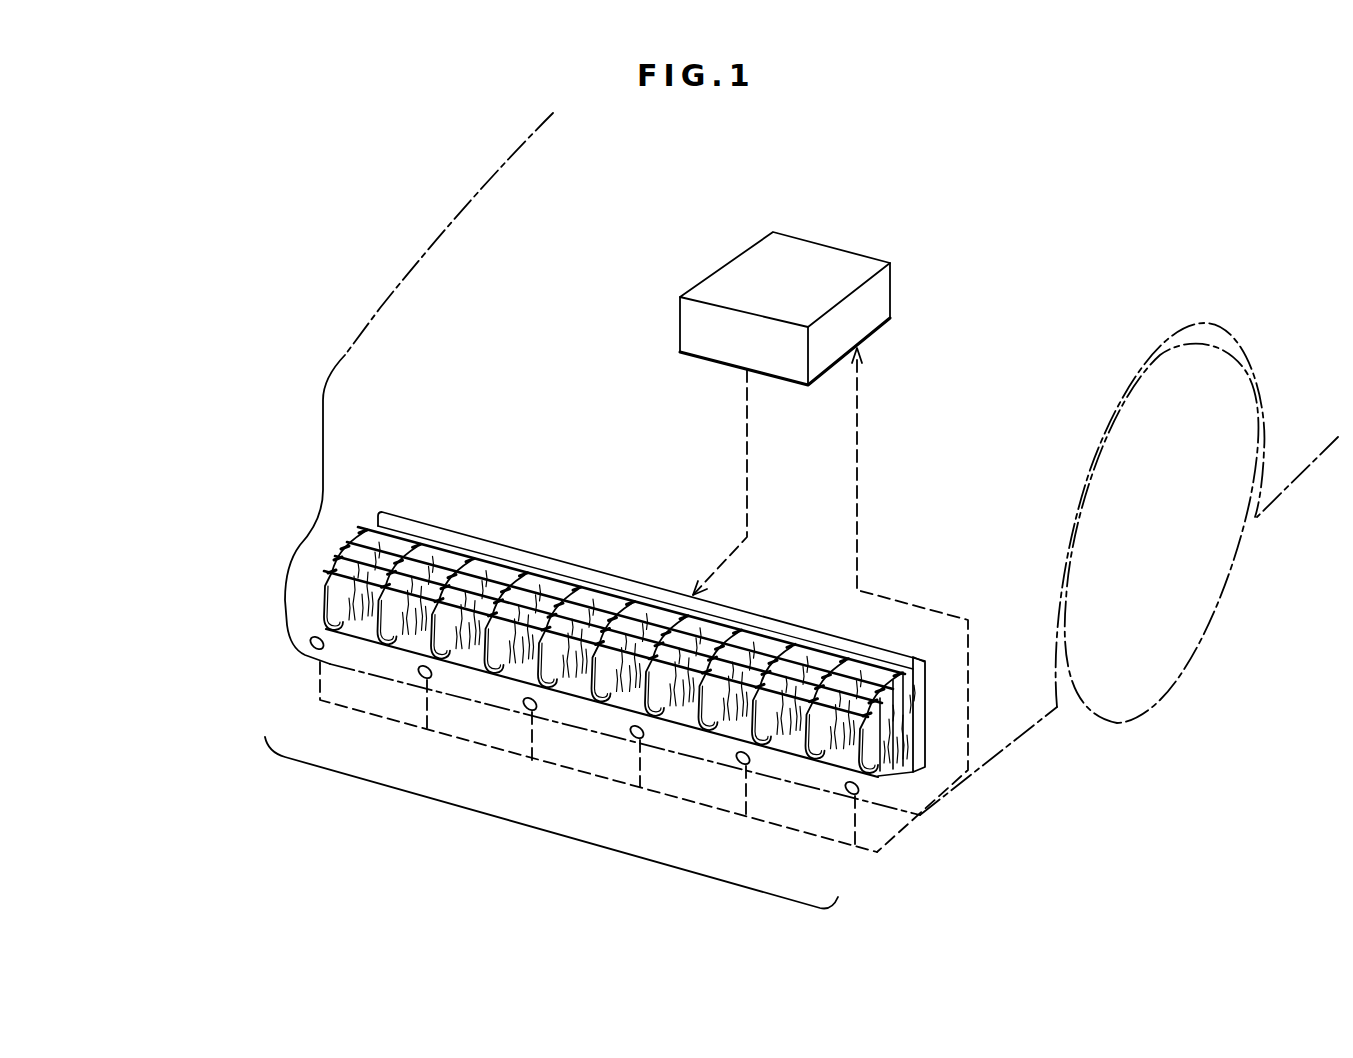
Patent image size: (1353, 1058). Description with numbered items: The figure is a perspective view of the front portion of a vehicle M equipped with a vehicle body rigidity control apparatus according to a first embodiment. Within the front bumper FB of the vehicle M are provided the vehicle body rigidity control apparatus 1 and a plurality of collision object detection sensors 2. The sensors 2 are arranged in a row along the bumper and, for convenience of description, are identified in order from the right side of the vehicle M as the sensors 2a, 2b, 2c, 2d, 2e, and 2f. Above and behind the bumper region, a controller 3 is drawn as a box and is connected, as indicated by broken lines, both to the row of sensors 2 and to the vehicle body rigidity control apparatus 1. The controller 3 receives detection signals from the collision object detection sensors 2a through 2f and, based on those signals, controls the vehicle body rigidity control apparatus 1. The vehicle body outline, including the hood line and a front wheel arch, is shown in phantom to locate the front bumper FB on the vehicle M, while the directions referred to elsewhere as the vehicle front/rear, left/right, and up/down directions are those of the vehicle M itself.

The vehicle M is at (437, 228).
The vehicle body rigidity control apparatus 1 is at (332, 561).
The front bumper FB is at (282, 630).
The collision object detection sensors 2 is at (571, 794).
The collision object detection sensor 2a is at (315, 649).
The collision object detection sensor 2b is at (423, 678).
The collision object detection sensor 2c is at (528, 710).
The collision object detection sensor 2d is at (635, 738).
The collision object detection sensor 2e is at (741, 764).
The collision object detection sensor 2f is at (850, 794).
The controller 3 is at (818, 264).